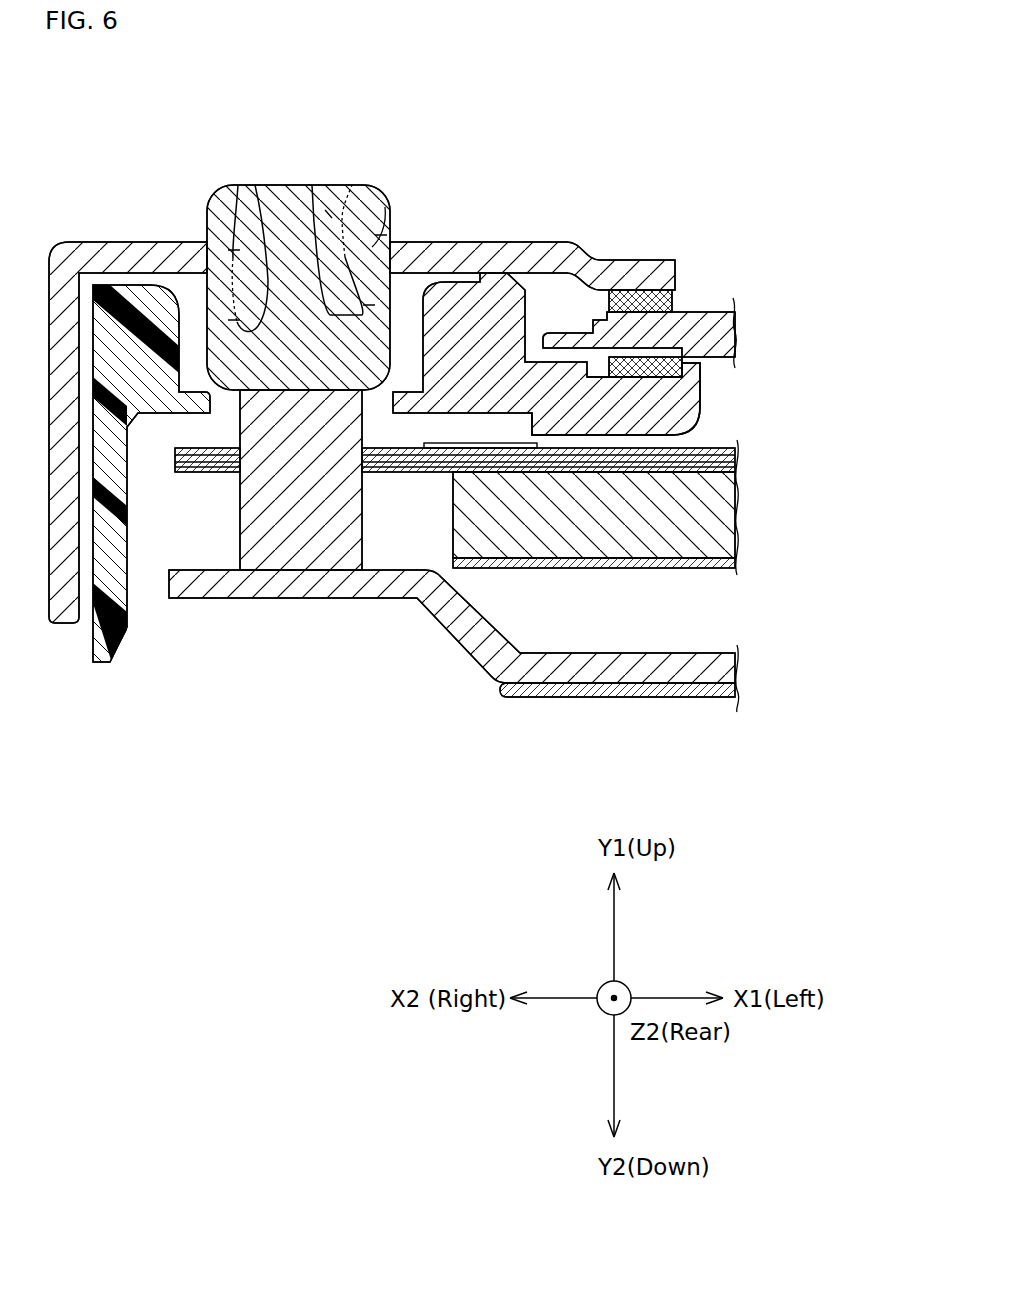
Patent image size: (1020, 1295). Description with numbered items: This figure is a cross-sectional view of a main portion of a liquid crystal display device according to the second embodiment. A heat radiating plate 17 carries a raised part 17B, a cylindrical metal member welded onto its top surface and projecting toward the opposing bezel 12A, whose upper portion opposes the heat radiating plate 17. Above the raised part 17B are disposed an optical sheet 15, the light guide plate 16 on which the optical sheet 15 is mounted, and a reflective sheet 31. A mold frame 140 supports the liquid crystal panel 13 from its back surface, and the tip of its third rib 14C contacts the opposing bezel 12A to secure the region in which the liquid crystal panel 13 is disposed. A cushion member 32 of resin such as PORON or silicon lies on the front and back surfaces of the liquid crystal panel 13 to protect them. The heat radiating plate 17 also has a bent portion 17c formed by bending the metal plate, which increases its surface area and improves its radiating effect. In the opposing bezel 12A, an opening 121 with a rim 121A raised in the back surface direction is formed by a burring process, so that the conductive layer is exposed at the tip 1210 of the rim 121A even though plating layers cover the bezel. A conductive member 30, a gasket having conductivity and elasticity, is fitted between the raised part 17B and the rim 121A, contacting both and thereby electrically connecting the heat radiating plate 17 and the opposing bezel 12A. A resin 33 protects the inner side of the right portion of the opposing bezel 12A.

The opposing bezel 12A is at (108, 252).
The rim 121A is at (240, 248).
The tip 1210 is at (300, 295).
The conductive member 30 is at (306, 205).
The opening 121 is at (343, 258).
The third rib 14C is at (500, 330).
The cushion member 32 is at (672, 300).
The liquid crystal panel 13 is at (710, 333).
The mold frame 140 is at (673, 398).
The optical sheet 15 is at (743, 445).
The light guide plate 16 is at (700, 510).
The reflective sheet 31 is at (730, 562).
The heat radiating plate 17 is at (653, 652).
The bent portion 17c is at (743, 681).
The raised part 17B is at (262, 513).
The resin 33 is at (97, 652).